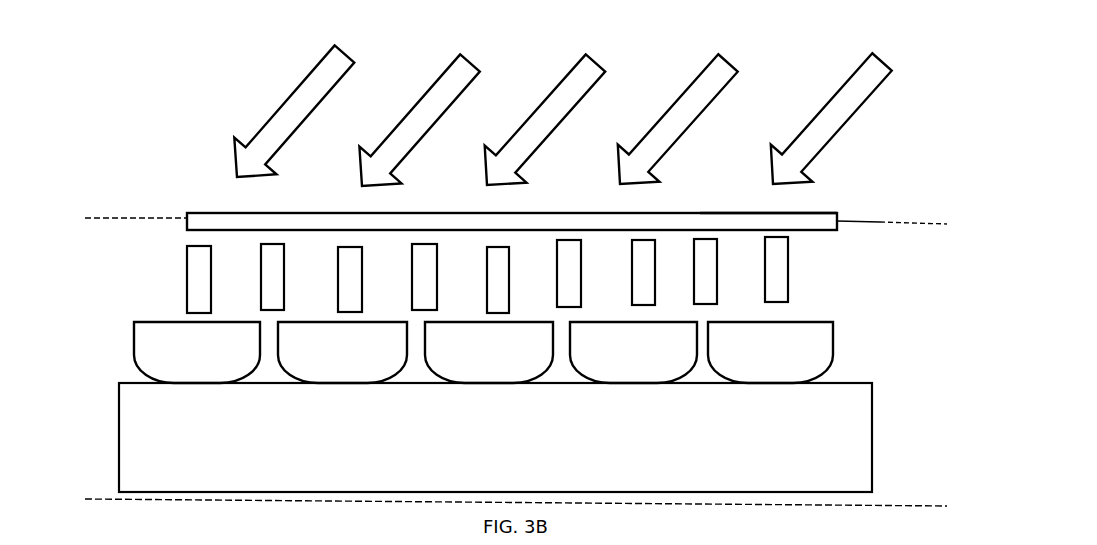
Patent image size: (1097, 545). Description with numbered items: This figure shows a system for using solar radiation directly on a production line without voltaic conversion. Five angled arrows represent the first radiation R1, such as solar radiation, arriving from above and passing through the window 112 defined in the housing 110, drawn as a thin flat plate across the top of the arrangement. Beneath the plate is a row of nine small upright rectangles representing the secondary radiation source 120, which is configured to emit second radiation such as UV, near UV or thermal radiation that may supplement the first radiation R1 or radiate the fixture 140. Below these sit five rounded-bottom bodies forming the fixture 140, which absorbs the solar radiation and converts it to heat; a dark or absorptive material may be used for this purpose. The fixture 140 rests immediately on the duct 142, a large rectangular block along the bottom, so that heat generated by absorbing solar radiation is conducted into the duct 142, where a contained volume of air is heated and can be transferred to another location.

The first radiation R1 is at (441, 71).
The housing 110 is at (207, 212).
The window 112 is at (812, 211).
The secondary radiation source 120 is at (186, 274).
The fixture 140 is at (832, 338).
The duct 142 is at (867, 433).